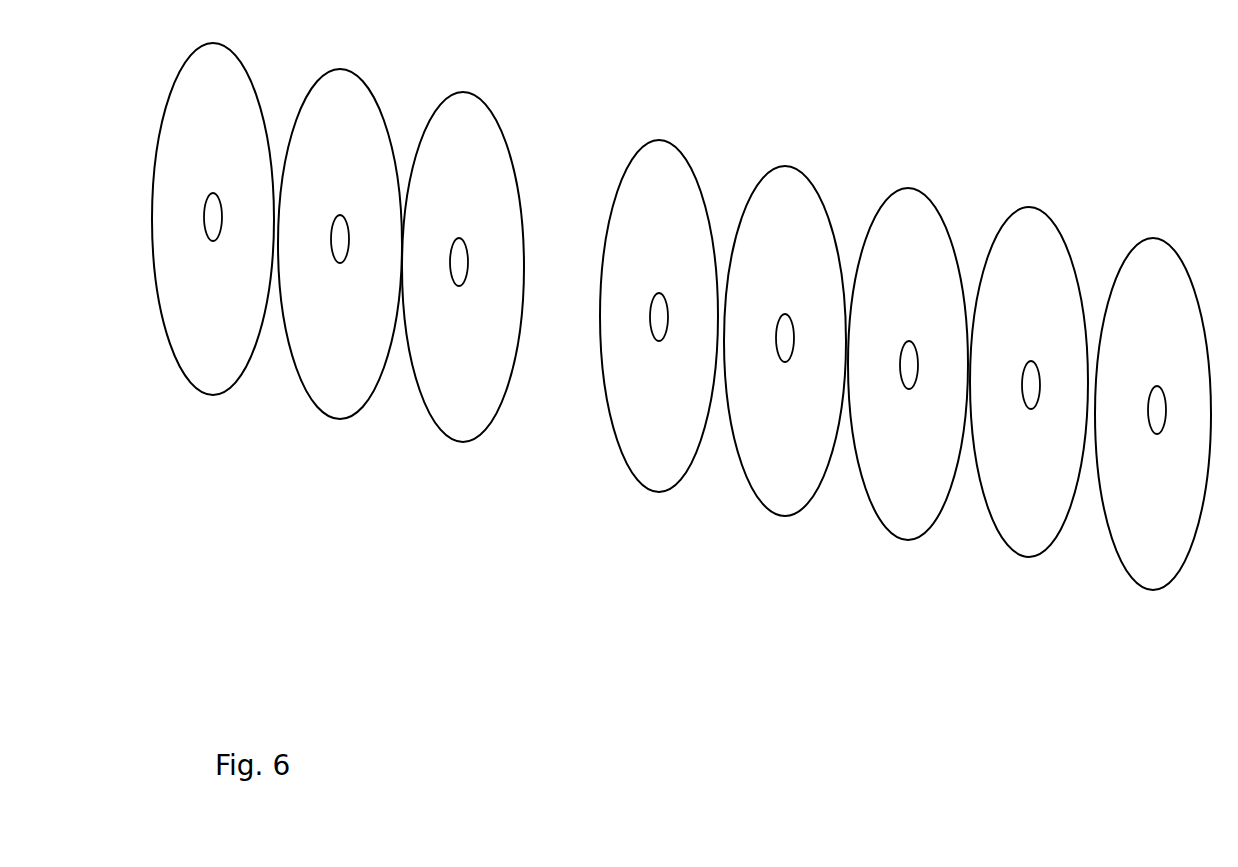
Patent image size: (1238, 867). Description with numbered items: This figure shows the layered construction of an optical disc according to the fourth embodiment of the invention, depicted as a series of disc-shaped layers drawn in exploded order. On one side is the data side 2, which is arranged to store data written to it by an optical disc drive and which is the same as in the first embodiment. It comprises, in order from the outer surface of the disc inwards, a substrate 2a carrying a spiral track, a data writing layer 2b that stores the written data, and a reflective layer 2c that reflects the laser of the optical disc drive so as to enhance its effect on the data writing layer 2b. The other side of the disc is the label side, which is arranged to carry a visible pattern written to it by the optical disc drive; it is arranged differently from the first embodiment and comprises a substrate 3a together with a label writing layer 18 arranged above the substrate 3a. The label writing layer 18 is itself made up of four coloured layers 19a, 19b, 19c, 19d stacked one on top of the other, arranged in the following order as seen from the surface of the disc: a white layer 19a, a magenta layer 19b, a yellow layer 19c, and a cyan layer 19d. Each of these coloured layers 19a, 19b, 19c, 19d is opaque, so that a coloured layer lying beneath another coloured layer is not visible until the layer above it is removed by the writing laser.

The data side 2 is at (347, 328).
The substrate 2a is at (228, 92).
The data writing layer 2b is at (352, 115).
The reflective layer 2c is at (478, 122).
The label writing layer 18 is at (905, 422).
The substrate 3a is at (678, 177).
The white layer 19a is at (1143, 260).
The magenta layer 19b is at (1022, 232).
The yellow layer 19c is at (902, 227).
The cyan layer 19d is at (778, 200).